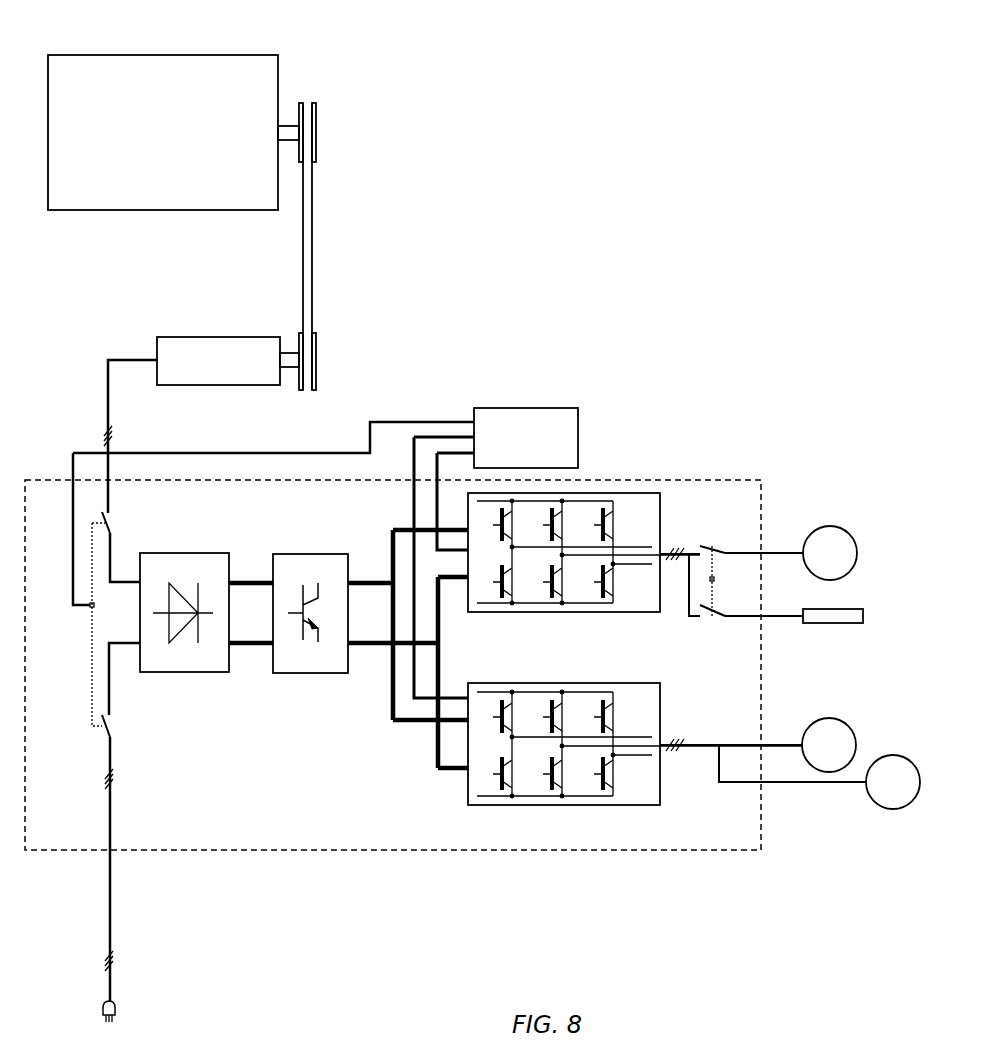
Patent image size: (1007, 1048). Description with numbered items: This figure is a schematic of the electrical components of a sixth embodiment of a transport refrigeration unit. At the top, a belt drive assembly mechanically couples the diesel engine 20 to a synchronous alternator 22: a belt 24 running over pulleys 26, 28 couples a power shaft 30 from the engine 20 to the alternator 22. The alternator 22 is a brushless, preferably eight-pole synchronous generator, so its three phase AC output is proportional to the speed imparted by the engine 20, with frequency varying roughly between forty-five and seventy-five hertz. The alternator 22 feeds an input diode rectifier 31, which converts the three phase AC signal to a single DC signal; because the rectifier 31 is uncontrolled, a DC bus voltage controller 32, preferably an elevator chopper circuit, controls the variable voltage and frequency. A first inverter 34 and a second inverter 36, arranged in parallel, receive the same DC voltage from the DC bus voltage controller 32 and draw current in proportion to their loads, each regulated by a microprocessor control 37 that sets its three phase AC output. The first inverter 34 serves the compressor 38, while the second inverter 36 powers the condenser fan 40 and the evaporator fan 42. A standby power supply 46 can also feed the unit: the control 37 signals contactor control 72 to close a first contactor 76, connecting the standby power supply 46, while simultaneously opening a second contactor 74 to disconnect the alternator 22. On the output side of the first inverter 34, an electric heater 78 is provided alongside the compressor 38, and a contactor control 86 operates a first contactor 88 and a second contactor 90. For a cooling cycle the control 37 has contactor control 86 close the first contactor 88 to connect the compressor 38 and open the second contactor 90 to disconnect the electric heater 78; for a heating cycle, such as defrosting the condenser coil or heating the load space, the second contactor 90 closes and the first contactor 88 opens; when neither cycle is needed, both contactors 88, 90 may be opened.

The diesel engine 20 is at (165, 63).
The synchronous alternator 22 is at (183, 340).
The belt 24 is at (313, 230).
The pulley 26 is at (316, 125).
The pulley 28 is at (316, 348).
The power shaft 30 is at (287, 123).
The input diode rectifier 31 is at (180, 673).
The DC bus voltage controller 32 is at (285, 673).
The first inverter 34 is at (600, 495).
The second inverter 36 is at (520, 683).
The microprocessor control 37 is at (520, 407).
The compressor 38 is at (826, 526).
The condenser fan 40 is at (822, 730).
The evaporator fan 42 is at (877, 802).
The standby power supply 46 is at (115, 1002).
The contactor control 72 is at (85, 607).
The second contactor 74 is at (108, 531).
The first contactor 76 is at (113, 737).
The electric heater 78 is at (830, 609).
The contactor control 86 is at (714, 579).
The first contactor 88 is at (710, 548).
The second contactor 90 is at (718, 620).